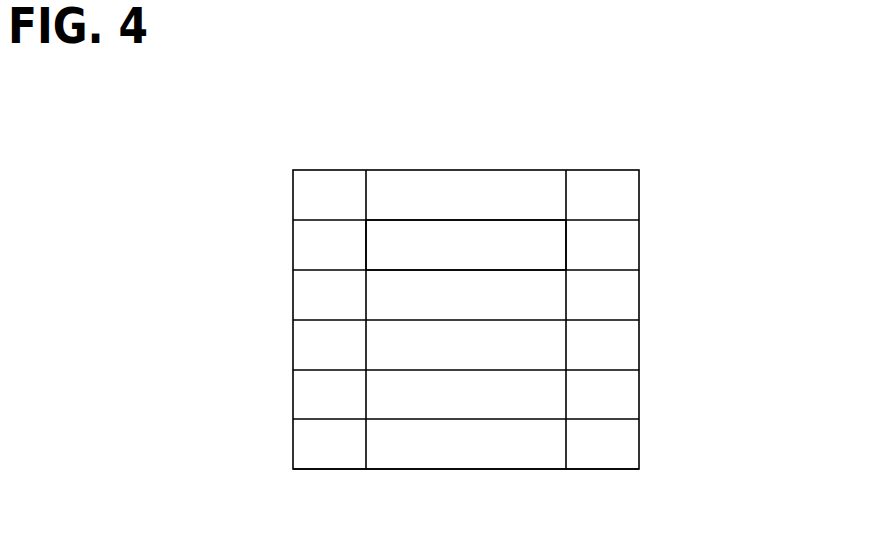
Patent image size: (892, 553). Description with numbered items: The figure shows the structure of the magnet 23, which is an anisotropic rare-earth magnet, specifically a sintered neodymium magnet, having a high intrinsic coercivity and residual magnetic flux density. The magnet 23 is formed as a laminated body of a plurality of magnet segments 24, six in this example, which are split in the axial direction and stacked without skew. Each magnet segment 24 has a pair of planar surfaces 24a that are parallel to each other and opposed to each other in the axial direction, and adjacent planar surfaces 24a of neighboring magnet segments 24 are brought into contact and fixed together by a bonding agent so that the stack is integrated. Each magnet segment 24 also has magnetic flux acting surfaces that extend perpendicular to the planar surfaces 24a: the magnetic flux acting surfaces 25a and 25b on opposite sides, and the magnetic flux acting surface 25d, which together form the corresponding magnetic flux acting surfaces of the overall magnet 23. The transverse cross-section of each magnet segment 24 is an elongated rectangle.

The magnet 23 is at (615, 169).
The magnet segment 24 is at (639, 200).
The planar surface 24a is at (458, 230).
The magnetic flux acting surface 25a is at (303, 352).
The magnetic flux acting surface 25b is at (628, 350).
The magnetic flux acting surface 25d is at (520, 458).